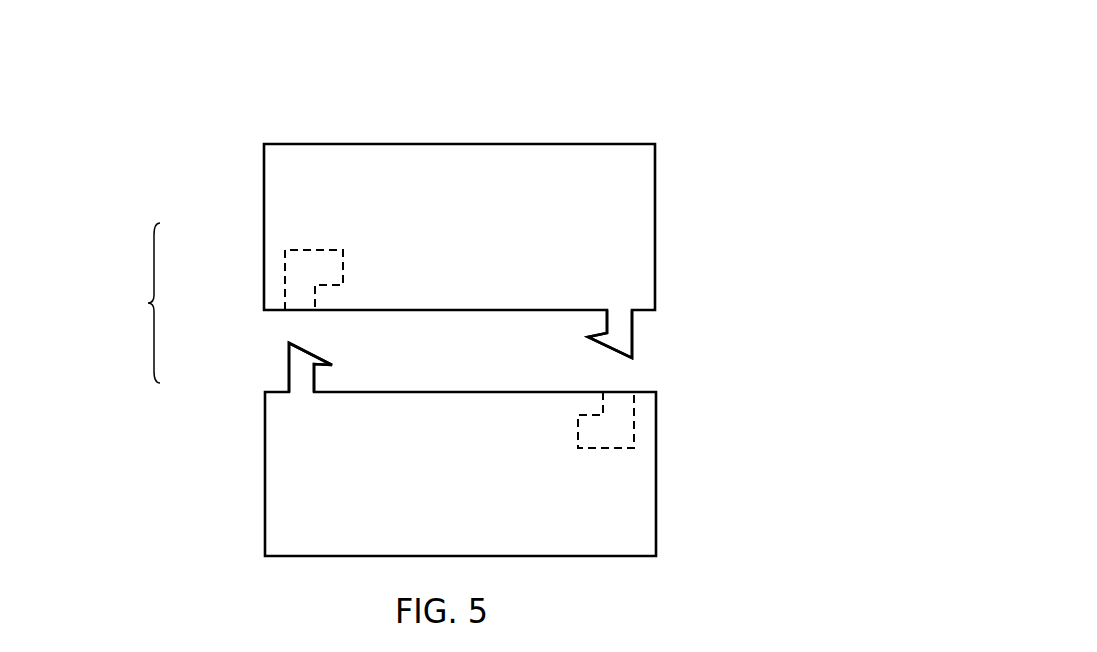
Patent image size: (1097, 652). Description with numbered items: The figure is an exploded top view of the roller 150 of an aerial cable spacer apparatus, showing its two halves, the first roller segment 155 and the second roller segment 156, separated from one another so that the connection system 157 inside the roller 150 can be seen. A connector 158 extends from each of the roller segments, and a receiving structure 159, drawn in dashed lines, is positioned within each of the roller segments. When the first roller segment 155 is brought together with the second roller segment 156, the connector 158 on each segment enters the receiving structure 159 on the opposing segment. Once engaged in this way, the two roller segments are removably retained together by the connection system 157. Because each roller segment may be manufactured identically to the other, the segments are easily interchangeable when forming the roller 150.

The roller 150 is at (710, 68).
The first roller segment 155 is at (500, 155).
The second roller segment 156 is at (620, 527).
The connection system 157 is at (148, 303).
The connector 158 is at (620, 340).
The receiving structure 159 is at (300, 283).